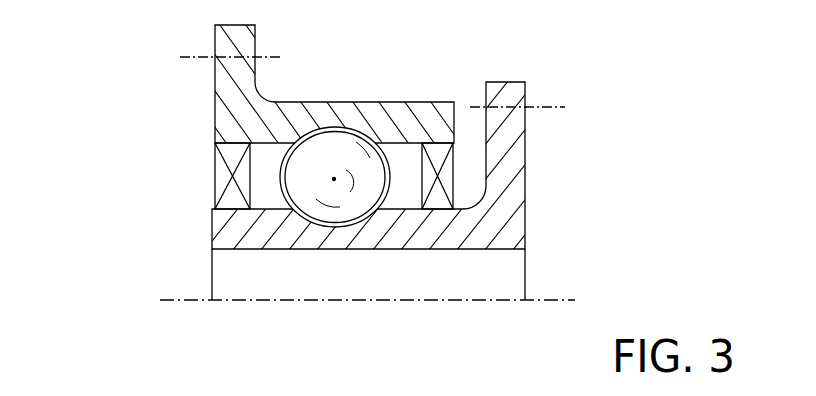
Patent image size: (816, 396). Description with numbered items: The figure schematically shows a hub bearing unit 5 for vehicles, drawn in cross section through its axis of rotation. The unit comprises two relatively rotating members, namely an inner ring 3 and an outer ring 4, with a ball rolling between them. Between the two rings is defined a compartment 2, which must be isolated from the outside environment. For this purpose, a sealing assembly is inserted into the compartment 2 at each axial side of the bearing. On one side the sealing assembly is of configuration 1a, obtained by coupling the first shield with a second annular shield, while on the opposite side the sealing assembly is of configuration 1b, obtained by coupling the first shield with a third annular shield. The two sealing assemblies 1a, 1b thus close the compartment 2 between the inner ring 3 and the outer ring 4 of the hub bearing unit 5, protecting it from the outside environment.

The sealing assembly of first configuration 1a is at (447, 173).
The sealing assembly of second configuration 1b is at (226, 194).
The compartment 2 is at (267, 183).
The inner ring 3 is at (400, 232).
The outer ring 4 is at (323, 113).
The hub bearing unit 5 is at (558, 101).